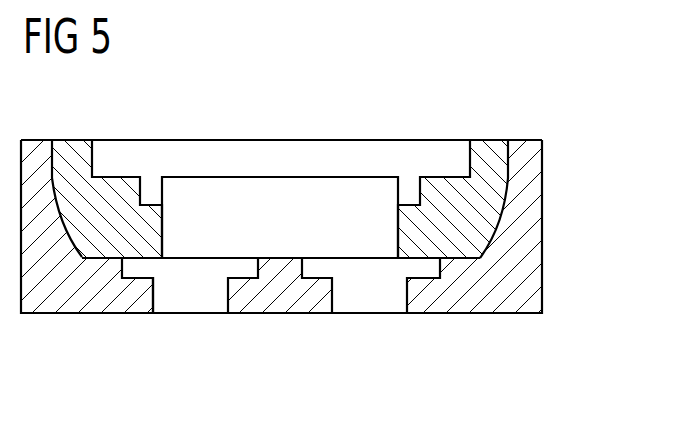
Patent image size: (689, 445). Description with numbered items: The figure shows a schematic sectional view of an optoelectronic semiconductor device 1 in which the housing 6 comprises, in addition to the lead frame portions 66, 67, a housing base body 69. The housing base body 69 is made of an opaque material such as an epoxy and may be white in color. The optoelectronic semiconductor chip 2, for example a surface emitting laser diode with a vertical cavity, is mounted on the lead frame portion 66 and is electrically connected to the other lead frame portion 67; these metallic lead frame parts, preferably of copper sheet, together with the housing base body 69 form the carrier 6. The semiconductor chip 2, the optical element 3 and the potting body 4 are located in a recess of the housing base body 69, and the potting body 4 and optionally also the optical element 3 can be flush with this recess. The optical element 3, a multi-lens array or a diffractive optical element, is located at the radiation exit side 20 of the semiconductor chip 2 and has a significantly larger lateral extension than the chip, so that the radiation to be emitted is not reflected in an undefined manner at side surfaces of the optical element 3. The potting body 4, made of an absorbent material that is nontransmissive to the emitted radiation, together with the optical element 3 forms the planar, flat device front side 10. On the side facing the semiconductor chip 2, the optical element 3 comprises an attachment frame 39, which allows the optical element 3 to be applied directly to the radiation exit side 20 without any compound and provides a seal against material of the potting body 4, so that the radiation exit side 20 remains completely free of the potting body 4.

The optoelectronic semiconductor device 1 is at (558, 70).
The optoelectronic semiconductor chip 2 is at (353, 197).
The optical element 3 is at (405, 148).
The potting body 4 is at (492, 150).
The carrier 6 is at (364, 375).
The device front side 10 is at (280, 102).
The radiation exit side 20 is at (276, 181).
The attachment frame 39 is at (153, 188).
The lead frame portion 66 is at (192, 311).
The lead frame portion 67 is at (360, 308).
The housing base body 69 is at (132, 311).